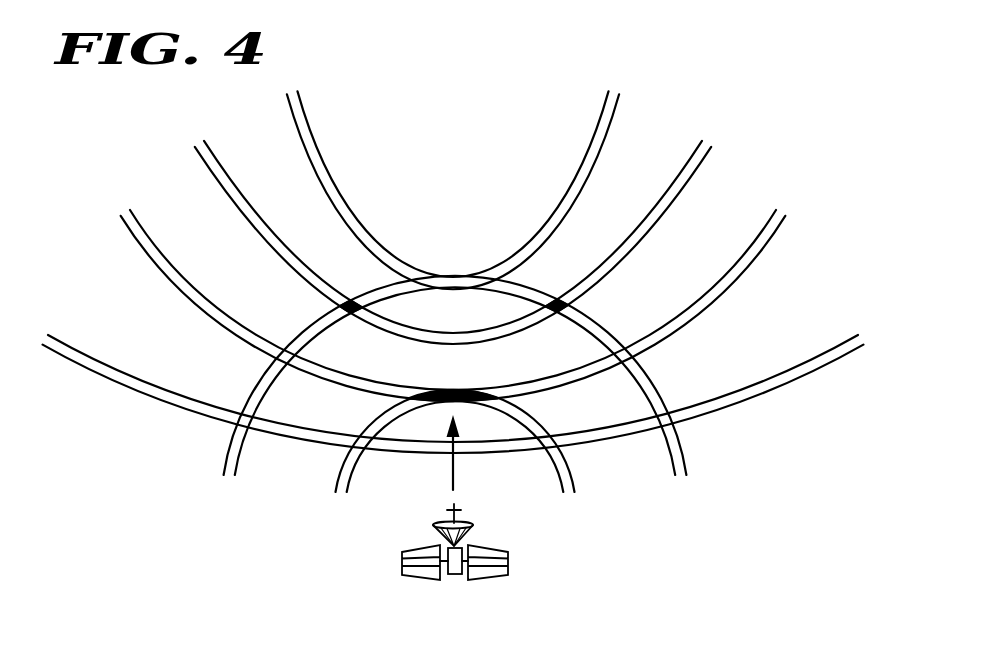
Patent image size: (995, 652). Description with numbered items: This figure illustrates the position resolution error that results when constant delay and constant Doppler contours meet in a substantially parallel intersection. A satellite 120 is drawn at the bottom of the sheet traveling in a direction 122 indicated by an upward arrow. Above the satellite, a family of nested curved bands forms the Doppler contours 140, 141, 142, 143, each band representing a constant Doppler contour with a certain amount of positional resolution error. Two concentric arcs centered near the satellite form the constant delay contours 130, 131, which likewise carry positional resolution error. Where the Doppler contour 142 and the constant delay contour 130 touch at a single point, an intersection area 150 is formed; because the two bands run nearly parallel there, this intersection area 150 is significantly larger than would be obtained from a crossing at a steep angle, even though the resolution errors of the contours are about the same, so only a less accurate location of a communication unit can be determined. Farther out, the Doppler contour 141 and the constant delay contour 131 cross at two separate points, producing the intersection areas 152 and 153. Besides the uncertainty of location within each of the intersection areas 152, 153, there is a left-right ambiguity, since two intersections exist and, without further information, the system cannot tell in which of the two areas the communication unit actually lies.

The satellite 120 is at (453, 584).
The direction 122 is at (455, 472).
The constant delay contour 130 is at (377, 418).
The constant delay contour 131 is at (660, 397).
The Doppler contour 140 is at (611, 128).
The Doppler contour 141 is at (679, 197).
The Doppler contour 142 is at (747, 276).
The Doppler contour 143 is at (801, 376).
The intersection area 150 is at (463, 391).
The intersection area 152 is at (336, 300).
The intersection area 153 is at (570, 301).